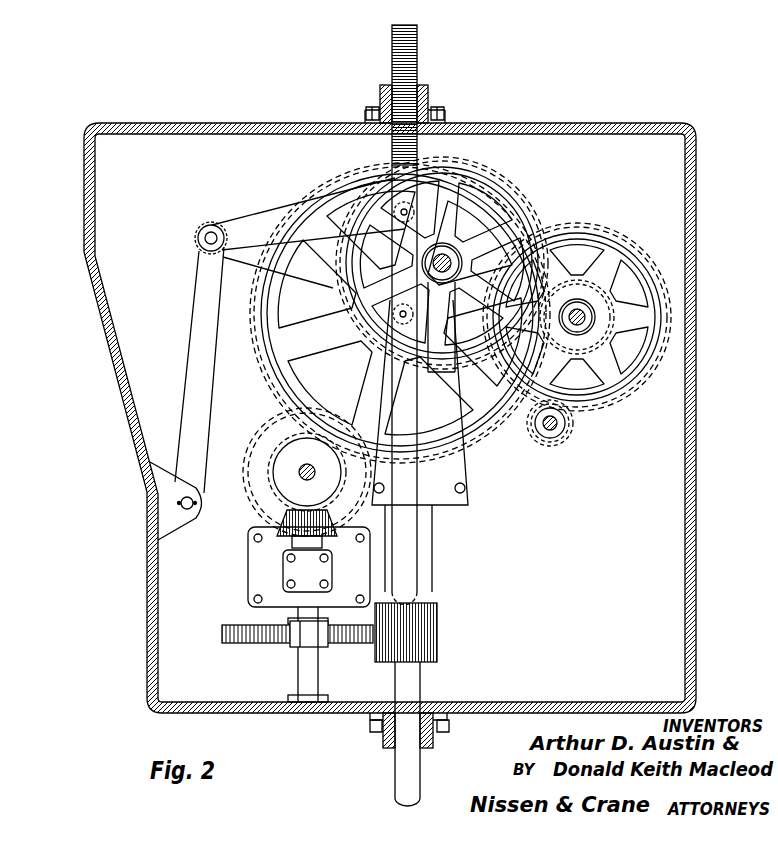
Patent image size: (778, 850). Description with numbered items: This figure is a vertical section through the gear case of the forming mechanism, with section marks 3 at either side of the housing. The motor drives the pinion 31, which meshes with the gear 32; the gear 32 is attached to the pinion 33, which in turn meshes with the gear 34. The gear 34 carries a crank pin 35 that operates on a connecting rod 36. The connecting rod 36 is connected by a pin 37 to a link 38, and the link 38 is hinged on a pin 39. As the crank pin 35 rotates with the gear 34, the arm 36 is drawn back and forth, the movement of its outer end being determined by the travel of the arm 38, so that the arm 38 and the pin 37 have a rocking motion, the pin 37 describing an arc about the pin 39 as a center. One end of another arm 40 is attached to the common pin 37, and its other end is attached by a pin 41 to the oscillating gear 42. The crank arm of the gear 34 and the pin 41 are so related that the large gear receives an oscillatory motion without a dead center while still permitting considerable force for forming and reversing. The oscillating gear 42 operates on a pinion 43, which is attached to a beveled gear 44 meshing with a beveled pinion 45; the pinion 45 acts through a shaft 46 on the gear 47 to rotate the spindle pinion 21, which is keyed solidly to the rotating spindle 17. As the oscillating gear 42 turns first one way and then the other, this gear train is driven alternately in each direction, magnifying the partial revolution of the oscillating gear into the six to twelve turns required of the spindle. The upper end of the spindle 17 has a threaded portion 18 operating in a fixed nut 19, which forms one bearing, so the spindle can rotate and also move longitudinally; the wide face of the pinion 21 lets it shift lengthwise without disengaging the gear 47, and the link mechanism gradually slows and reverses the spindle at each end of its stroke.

The section line of FIG. 3 is at (106, 146).
The rotating spindle 17 is at (409, 687).
The threaded portion 18 is at (416, 52).
The fixed nut 19 is at (426, 102).
The spindle pinion 21 is at (419, 632).
The pinion 31 is at (573, 434).
The gear 32 is at (656, 345).
The pinion 33 is at (603, 301).
The gear 34 is at (520, 194).
The crank pin 35 is at (398, 368).
The connecting rod 36 is at (312, 298).
The pin 37 is at (198, 238).
The link 38 is at (198, 344).
The pin 39 is at (188, 510).
The arm 40 is at (250, 230).
The pin 41 is at (398, 204).
The oscillating gear 42 is at (277, 380).
The pinion 43 is at (287, 482).
The beveled gear 44 is at (257, 453).
The beveled pinion 45 is at (262, 532).
The shaft 46 is at (308, 606).
The gear 47 is at (247, 638).